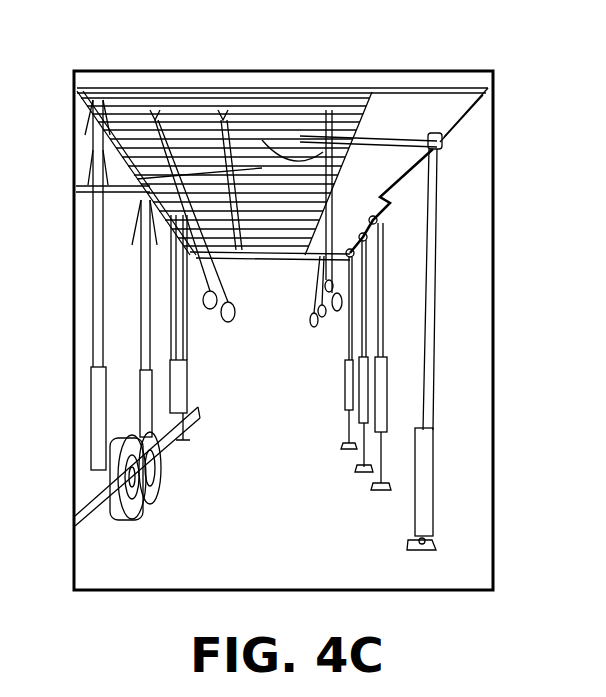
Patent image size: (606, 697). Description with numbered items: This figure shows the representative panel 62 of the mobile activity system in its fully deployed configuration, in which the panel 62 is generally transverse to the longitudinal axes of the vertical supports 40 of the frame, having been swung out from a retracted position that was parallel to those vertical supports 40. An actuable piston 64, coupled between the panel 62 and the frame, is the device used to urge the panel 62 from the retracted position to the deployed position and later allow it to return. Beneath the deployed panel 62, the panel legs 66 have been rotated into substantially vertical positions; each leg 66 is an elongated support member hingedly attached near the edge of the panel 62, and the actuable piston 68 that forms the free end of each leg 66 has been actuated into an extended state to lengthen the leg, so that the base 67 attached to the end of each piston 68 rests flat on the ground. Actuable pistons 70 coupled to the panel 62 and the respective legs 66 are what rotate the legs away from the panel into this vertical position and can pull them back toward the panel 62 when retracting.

The vertical supports 40 is at (97, 252).
The panel 62 is at (400, 112).
The actuable piston 64 is at (195, 140).
The panel legs 66 is at (430, 303).
The base 67 is at (433, 545).
The actuable piston 68 is at (415, 530).
The actuable pistons 70 is at (408, 157).